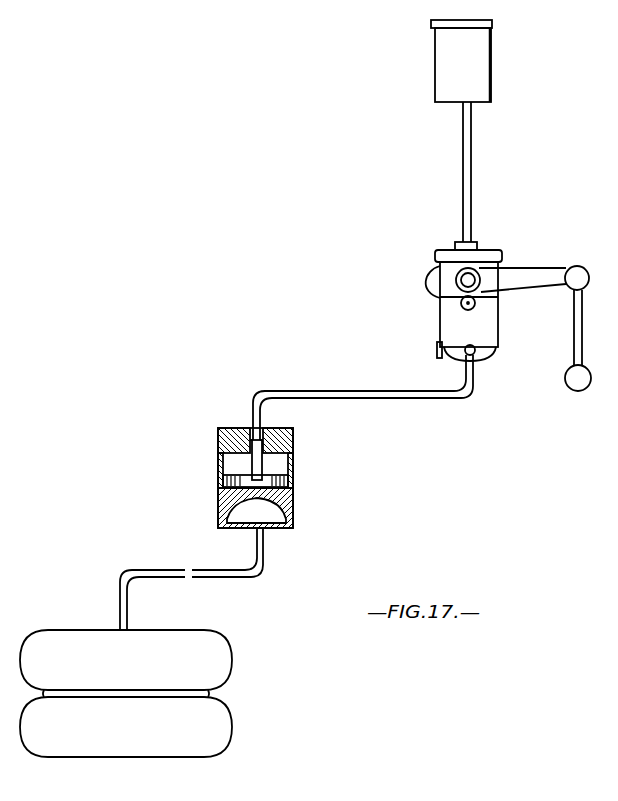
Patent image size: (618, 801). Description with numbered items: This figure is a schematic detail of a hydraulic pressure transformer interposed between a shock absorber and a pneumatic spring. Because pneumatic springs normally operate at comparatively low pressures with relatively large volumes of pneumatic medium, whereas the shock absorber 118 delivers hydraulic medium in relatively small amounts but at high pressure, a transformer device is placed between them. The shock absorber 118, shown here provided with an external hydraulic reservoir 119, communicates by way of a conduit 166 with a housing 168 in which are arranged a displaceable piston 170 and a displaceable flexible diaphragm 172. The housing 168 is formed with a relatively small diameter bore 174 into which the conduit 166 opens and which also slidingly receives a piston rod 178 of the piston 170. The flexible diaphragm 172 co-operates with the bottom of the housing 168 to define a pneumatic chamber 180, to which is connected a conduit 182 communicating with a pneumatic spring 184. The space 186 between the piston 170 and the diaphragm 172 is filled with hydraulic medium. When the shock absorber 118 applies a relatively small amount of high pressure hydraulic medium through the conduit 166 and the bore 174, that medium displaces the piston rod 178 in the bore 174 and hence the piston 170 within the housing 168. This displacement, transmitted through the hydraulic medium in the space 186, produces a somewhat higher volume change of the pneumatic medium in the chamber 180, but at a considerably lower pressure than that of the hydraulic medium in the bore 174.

The shock absorber 118 is at (441, 318).
The external hydraulic reservoir 119 is at (435, 70).
The conduit 166 is at (337, 390).
The housing 168 is at (228, 439).
The piston 170 is at (240, 480).
The diaphragm 172 is at (288, 511).
The bore 174 is at (258, 433).
The piston rod 178 is at (258, 462).
The pneumatic chamber 180 is at (267, 517).
The conduit 182 is at (157, 572).
The pneumatic spring 184 is at (213, 650).
The space 186 is at (221, 500).